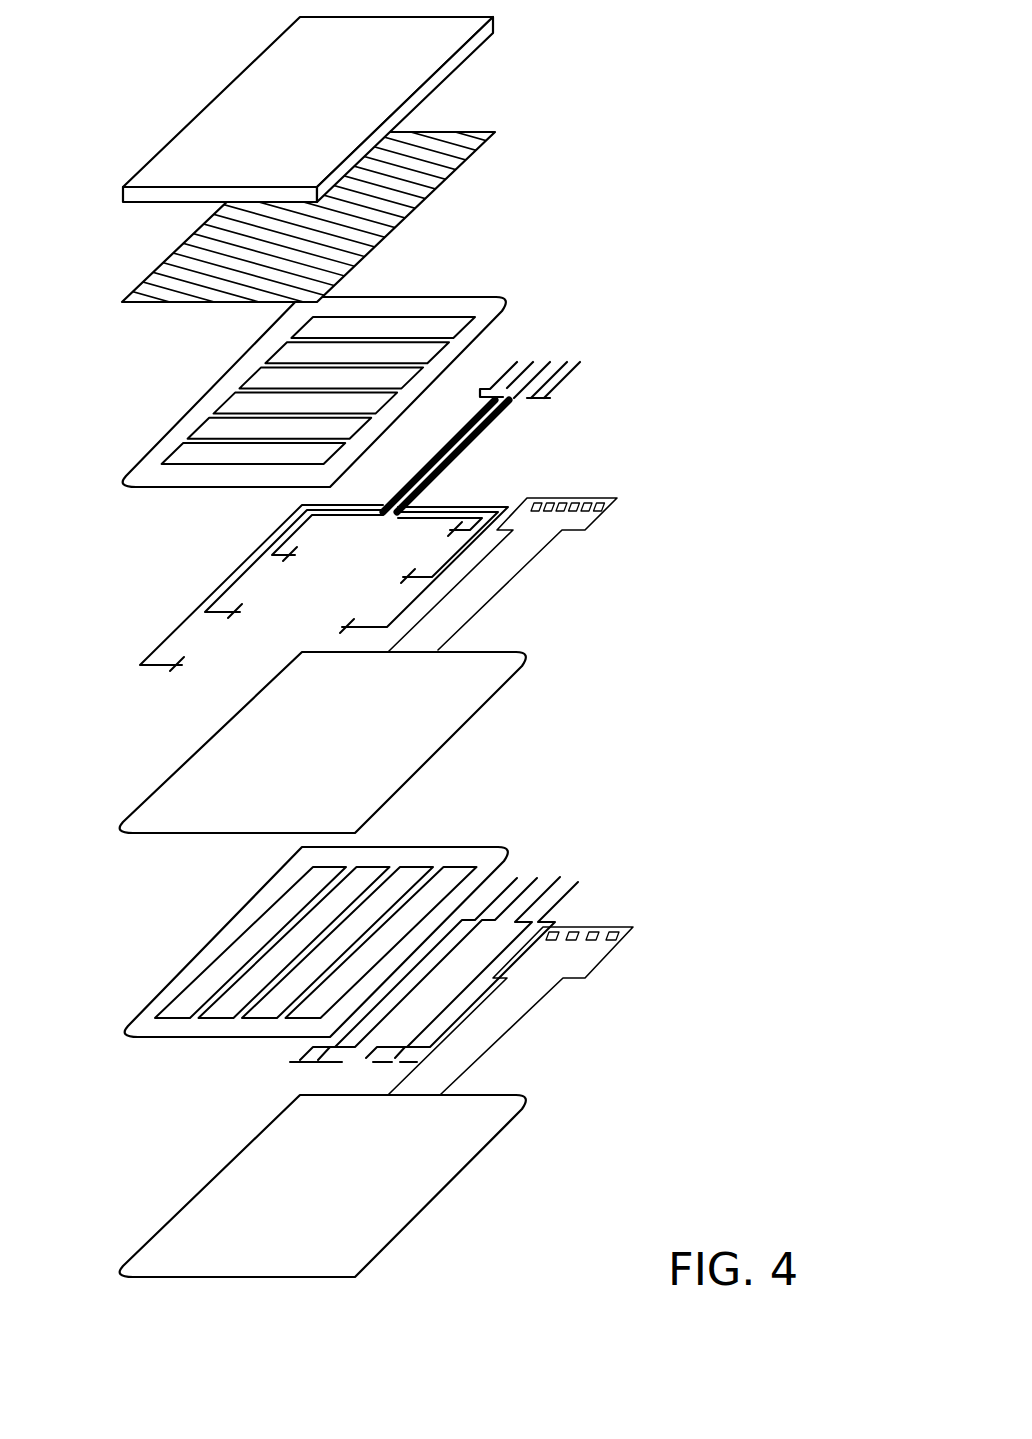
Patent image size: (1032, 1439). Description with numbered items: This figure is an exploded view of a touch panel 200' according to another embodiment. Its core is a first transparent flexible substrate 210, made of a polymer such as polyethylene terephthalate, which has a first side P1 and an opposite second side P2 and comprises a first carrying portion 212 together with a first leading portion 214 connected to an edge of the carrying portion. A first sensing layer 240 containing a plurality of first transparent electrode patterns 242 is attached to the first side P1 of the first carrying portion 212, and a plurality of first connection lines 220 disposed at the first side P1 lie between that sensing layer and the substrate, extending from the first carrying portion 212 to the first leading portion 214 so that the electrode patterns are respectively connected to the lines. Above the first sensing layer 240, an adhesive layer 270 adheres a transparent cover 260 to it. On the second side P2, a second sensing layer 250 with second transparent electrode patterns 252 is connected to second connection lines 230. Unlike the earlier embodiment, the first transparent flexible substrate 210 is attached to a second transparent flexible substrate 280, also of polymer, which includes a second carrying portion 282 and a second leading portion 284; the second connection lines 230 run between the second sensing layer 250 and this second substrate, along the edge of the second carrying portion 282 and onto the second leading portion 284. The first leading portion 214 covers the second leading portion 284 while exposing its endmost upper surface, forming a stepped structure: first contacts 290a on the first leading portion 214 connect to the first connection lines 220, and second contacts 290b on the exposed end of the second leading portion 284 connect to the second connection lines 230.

The touch panel 200' is at (369, 650).
The first side P1 is at (375, 425).
The second side P2 is at (369, 1060).
The transparent cover 260 is at (458, 62).
The adhesive layer 270 is at (385, 213).
The first sensing layer 240 is at (345, 371).
The first transparent electrode patterns 242 is at (443, 320).
The first connection lines 220 is at (483, 443).
The first transparent flexible substrate 210 is at (405, 650).
The first leading portion 214 is at (415, 569).
The first carrying portion 212 is at (375, 742).
The first contacts 290a is at (598, 498).
The second sensing layer 250 is at (268, 942).
The second transparent electrode patterns 252 is at (212, 942).
The second connection lines 230 is at (578, 880).
The second transparent flexible substrate 280 is at (415, 1086).
The second leading portion 284 is at (549, 995).
The second carrying portion 282 is at (375, 1186).
The second contacts 290b is at (617, 927).